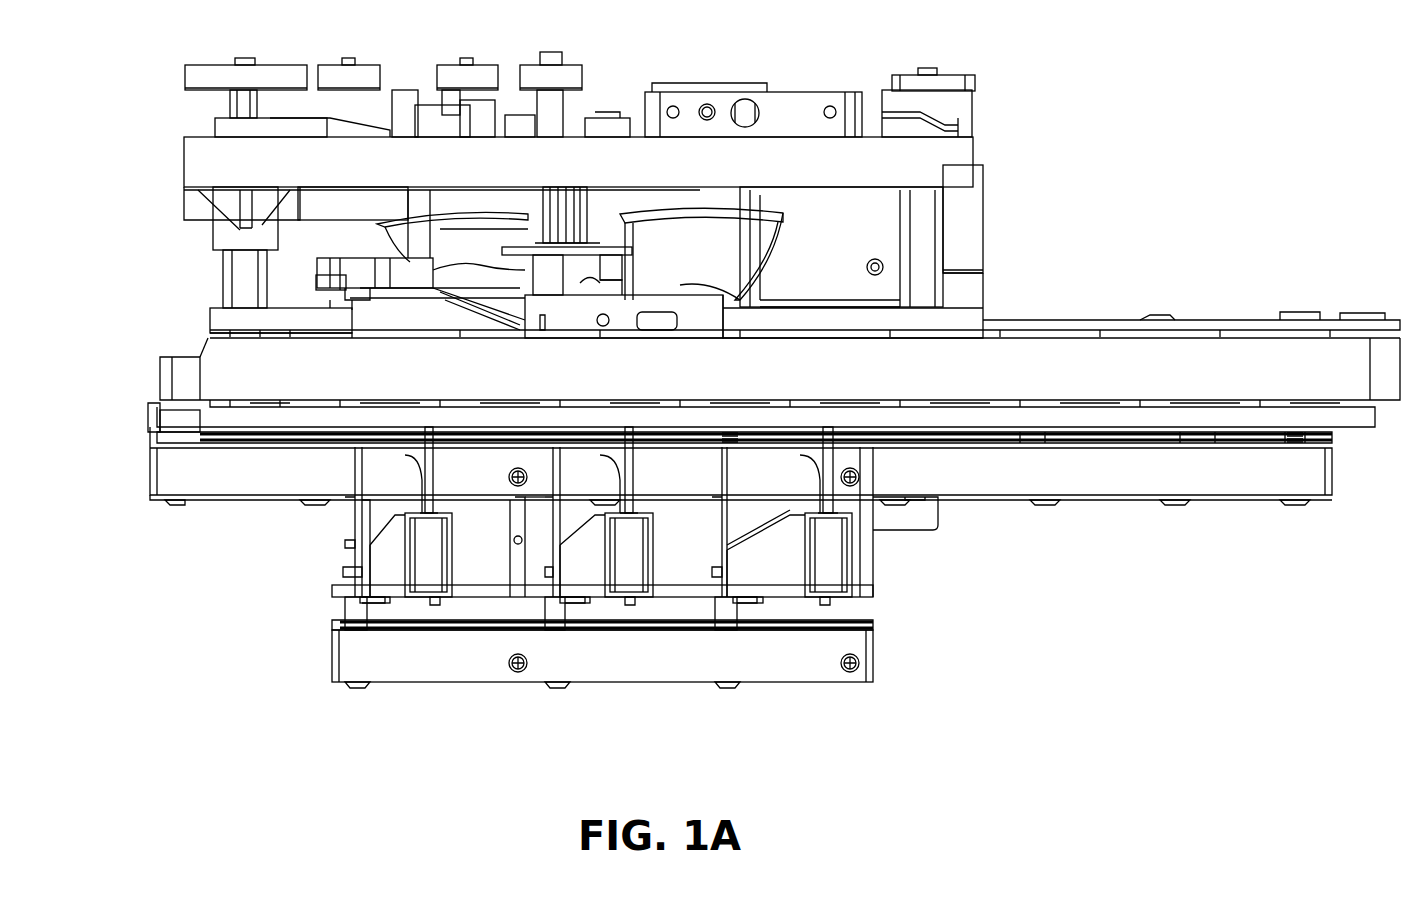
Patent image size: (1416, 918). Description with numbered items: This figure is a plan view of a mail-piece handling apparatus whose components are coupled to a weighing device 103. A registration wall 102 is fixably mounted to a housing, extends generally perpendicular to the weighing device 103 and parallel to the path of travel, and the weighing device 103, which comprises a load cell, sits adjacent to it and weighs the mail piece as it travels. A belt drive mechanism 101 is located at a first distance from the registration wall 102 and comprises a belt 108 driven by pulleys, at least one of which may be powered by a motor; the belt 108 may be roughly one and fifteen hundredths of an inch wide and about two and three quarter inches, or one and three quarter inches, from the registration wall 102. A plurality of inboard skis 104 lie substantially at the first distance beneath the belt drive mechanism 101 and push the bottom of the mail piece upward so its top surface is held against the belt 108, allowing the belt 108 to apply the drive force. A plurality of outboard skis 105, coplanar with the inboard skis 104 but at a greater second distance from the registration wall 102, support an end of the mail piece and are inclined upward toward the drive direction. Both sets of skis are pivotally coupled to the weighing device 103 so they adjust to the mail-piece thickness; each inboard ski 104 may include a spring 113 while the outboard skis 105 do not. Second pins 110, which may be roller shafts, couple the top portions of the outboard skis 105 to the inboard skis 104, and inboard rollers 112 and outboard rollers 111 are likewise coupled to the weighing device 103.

The belt drive mechanism 101 is at (170, 324).
The registration wall 102 is at (795, 148).
The weighing device 103 is at (935, 538).
The inboard skis 104 is at (158, 424).
The outboard skis 105 is at (410, 600).
The belt 108 is at (1040, 360).
The second pins 110 is at (420, 475).
The outboard rollers 111 is at (437, 548).
The inboard rollers 112 is at (432, 400).
The spring 113 is at (173, 433).